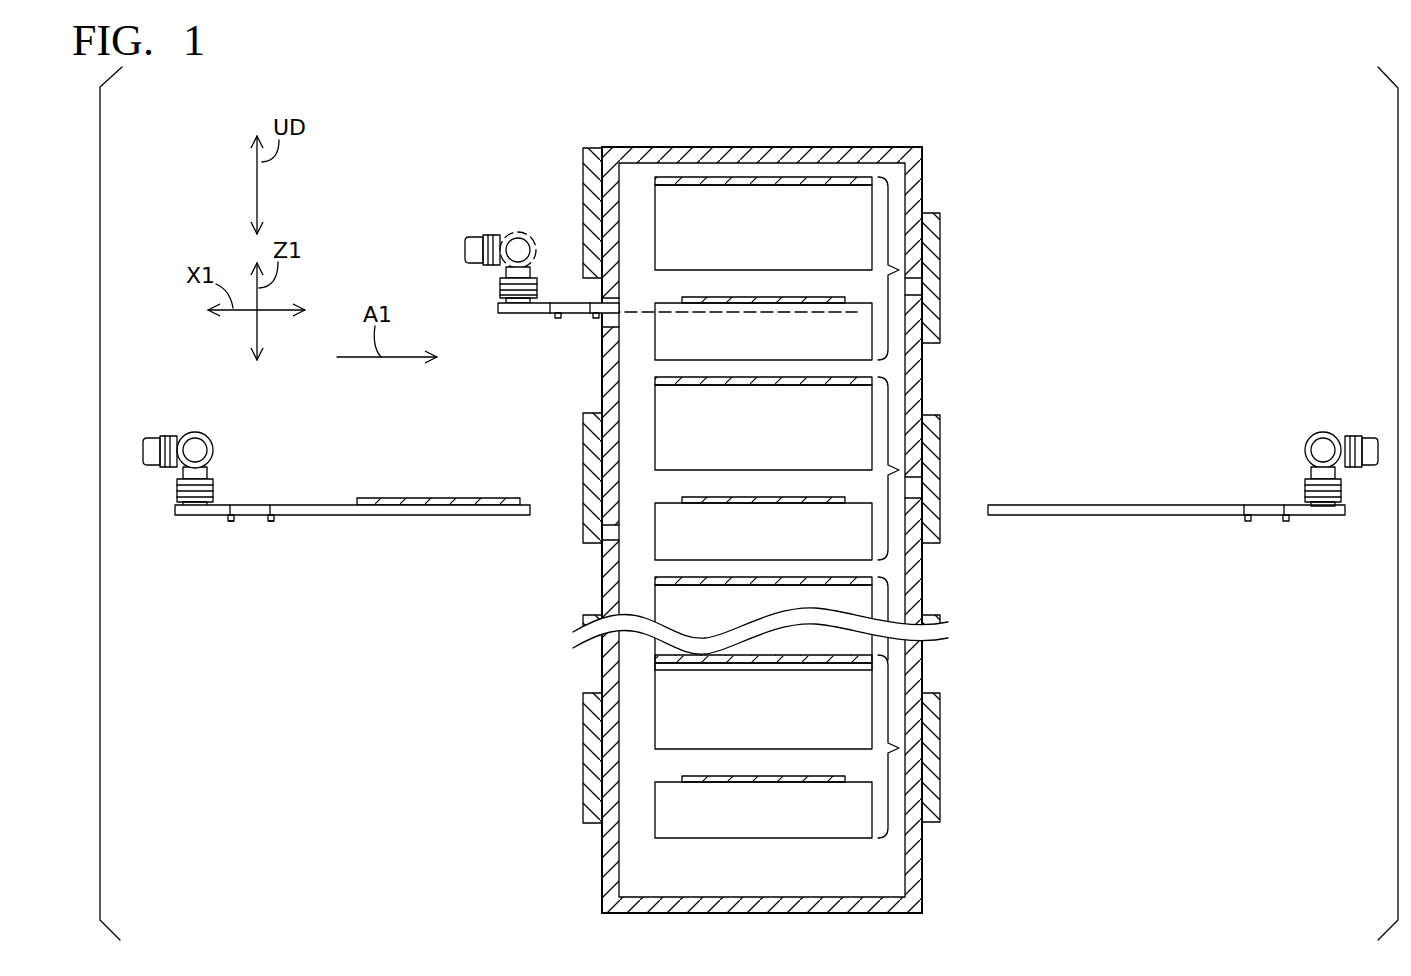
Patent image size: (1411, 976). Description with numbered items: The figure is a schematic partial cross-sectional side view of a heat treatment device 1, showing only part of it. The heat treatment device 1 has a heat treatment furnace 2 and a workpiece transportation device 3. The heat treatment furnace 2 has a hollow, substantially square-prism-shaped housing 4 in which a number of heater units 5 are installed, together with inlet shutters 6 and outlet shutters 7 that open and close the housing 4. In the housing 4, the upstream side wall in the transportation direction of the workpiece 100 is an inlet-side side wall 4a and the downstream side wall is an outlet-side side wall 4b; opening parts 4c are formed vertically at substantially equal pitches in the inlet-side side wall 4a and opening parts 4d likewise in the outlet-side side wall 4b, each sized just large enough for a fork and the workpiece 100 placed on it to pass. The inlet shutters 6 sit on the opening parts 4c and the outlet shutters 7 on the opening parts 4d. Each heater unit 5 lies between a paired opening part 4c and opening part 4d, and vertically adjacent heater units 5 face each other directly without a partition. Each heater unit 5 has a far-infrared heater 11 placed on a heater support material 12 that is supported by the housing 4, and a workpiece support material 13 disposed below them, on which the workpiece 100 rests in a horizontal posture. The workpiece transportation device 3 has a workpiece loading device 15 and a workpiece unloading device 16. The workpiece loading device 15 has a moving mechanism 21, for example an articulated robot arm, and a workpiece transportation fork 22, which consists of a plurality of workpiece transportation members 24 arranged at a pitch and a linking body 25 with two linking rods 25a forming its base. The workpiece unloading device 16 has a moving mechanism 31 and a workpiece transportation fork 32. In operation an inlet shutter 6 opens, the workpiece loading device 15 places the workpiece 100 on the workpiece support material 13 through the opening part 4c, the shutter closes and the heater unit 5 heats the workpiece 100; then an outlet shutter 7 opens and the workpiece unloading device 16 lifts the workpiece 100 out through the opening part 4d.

The heat treatment device 1 is at (1218, 227).
The heat treatment furnace 2 is at (892, 147).
The workpiece transportation device 3 is at (218, 444).
The housing 4 is at (922, 176).
The inlet-side side wall 4a is at (602, 566).
The outlet-side side wall 4b is at (925, 577).
The opening part 4c is at (605, 292).
The opening part 4d is at (920, 285).
The heater unit 5 is at (905, 266).
The inlet shutter 6 is at (590, 153).
The outlet shutter 7 is at (940, 221).
The far-infrared heater 11 is at (655, 181).
The heater support material 12 is at (662, 215).
The workpiece support material 13 is at (670, 347).
The workpiece loading device 15 is at (192, 432).
The workpiece unloading device 16 is at (1323, 432).
The moving mechanism 21 is at (153, 445).
The workpiece transportation fork 22 is at (288, 505).
The workpiece transportation member 24 is at (305, 516).
The linking body 25 is at (231, 519).
The linking rod 25a is at (236, 521).
The moving mechanism 31 is at (1363, 438).
The workpiece transportation fork 32 is at (1188, 505).
The workpiece 100 is at (722, 313).